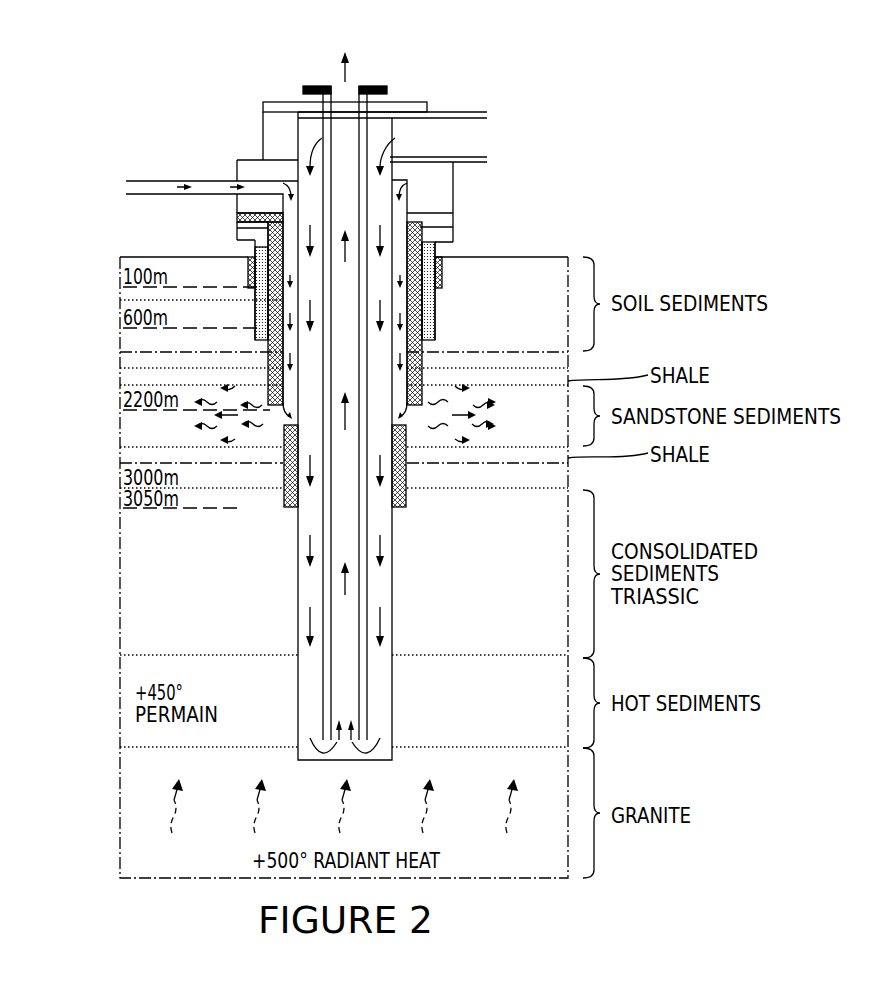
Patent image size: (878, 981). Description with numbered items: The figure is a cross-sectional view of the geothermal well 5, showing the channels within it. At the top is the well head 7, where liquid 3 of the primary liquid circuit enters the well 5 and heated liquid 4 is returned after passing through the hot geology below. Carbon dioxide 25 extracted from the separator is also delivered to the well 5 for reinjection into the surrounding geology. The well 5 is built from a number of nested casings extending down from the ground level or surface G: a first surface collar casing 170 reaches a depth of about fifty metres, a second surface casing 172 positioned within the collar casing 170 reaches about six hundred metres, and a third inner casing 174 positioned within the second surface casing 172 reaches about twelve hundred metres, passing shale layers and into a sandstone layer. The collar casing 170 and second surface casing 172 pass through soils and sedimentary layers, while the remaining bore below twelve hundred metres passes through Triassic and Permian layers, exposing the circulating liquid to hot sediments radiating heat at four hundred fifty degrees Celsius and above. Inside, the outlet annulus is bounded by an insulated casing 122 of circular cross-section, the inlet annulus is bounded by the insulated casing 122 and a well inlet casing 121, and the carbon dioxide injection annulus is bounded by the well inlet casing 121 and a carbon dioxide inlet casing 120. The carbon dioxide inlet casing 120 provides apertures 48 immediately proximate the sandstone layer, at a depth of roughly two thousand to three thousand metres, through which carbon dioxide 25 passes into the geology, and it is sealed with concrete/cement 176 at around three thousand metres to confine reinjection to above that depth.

The well head 7 is at (230, 76).
The heated liquid 4 is at (343, 84).
The liquid 3 is at (474, 138).
The carbon dioxide 25 is at (124, 187).
The ground level or surface G is at (500, 257).
The first surface collar casing 170 is at (257, 270).
The carbon dioxide inlet casing 120 is at (270, 313).
The second surface casing 172 is at (267, 330).
The third inner casing 174 is at (277, 370).
The apertures 48 is at (179, 436).
The concrete/cement 176 is at (287, 493).
The insulated casing 122 is at (323, 570).
The well inlet casing 121 is at (297, 600).
The geothermal well 5 is at (93, 706).